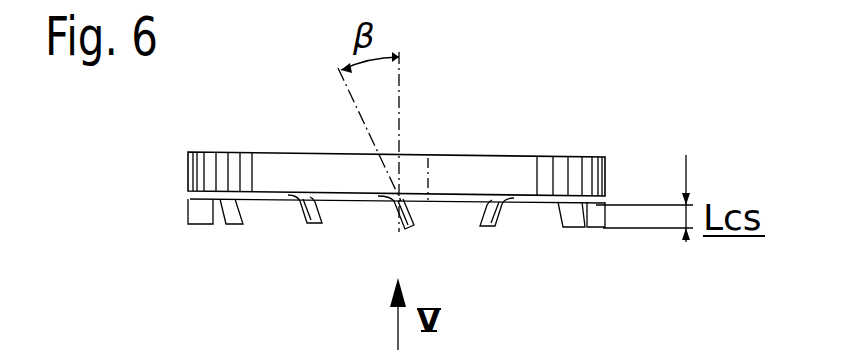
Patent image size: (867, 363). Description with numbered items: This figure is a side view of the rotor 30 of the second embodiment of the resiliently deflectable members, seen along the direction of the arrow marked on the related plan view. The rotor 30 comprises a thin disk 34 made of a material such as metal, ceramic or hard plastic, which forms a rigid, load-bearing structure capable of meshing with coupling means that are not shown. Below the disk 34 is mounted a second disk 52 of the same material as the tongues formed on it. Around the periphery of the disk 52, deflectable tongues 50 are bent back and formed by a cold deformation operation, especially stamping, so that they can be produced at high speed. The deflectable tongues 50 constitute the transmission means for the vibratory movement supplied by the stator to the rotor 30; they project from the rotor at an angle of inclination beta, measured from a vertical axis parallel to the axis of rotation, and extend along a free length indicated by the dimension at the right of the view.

The rotor 30 is at (477, 108).
The thin disk 34 is at (510, 166).
The deflectable tongues 50 is at (315, 226).
The disk 52 is at (457, 199).